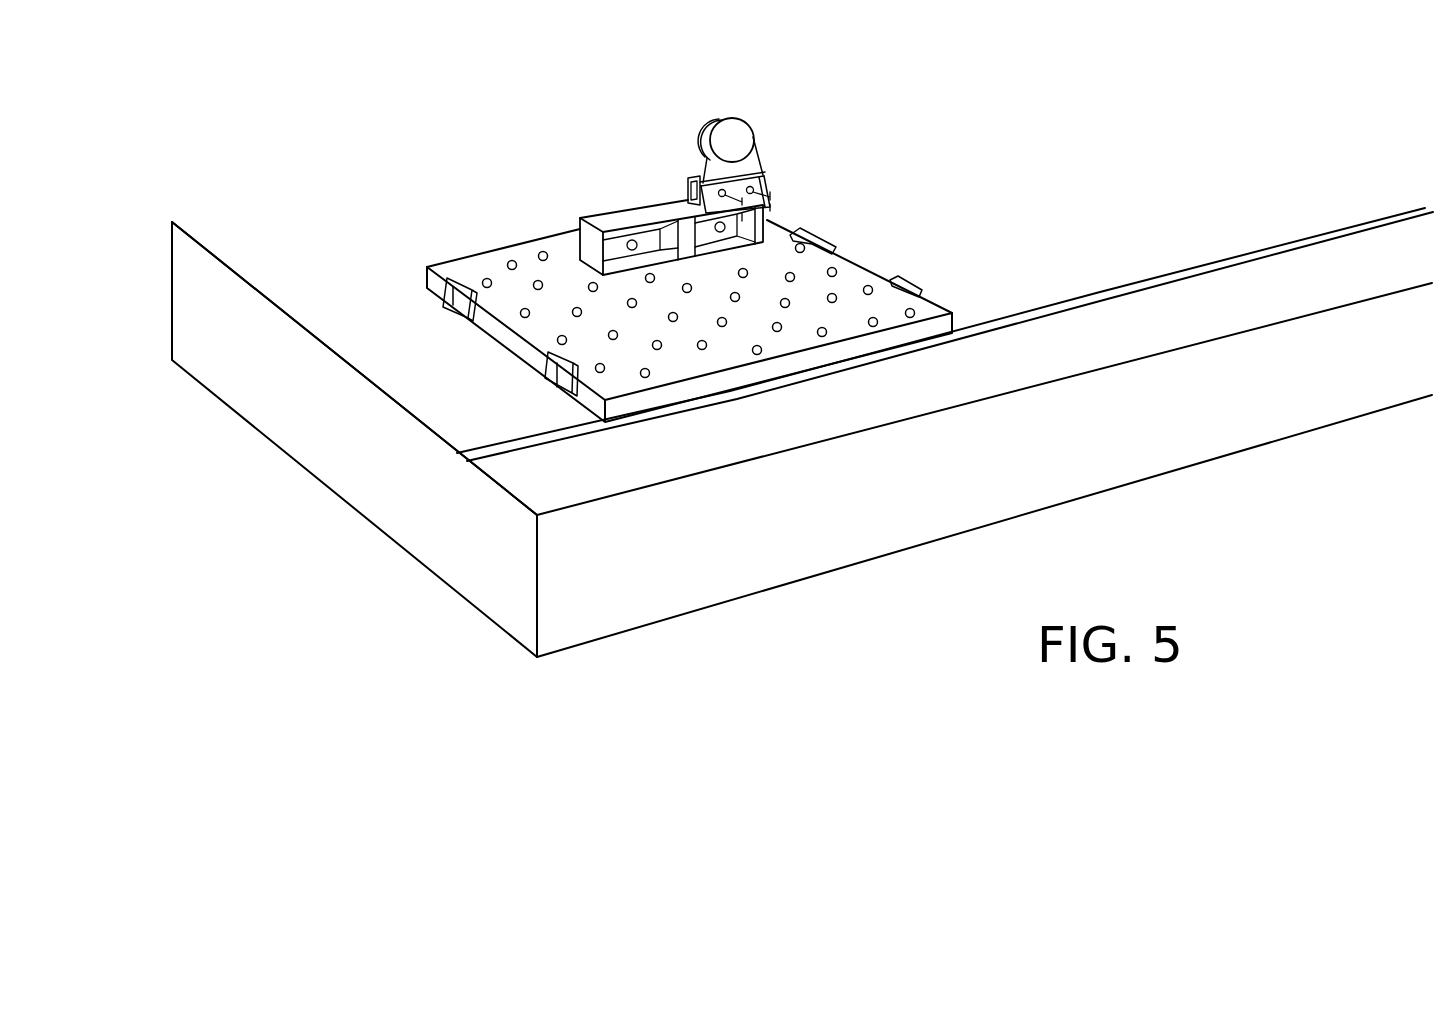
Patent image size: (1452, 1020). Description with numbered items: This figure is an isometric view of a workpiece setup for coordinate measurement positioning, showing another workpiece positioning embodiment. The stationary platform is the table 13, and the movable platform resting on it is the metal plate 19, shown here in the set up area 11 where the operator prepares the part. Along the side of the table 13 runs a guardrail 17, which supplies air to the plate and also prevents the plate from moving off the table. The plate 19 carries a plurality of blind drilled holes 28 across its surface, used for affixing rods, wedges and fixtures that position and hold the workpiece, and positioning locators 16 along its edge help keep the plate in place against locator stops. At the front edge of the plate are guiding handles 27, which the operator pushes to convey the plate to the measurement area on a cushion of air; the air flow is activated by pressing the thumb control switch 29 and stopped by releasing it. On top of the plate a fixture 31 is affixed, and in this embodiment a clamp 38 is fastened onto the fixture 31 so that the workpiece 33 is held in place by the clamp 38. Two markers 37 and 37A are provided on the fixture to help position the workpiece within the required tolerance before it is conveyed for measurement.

The set up area 11 is at (528, 385).
The table 13 is at (1137, 445).
The positioning locators 16 is at (802, 236).
The guardrails 17 is at (1275, 257).
The second movable platform 19 is at (848, 262).
The guiding handles 27 is at (447, 310).
The blind drilled holes 28 is at (481, 282).
The thumb control switch 29 is at (470, 317).
The fixture 31 is at (620, 210).
The workpiece 33 is at (745, 138).
The marker 37 is at (703, 182).
The marker 37A is at (767, 176).
The clamp 38 is at (772, 196).